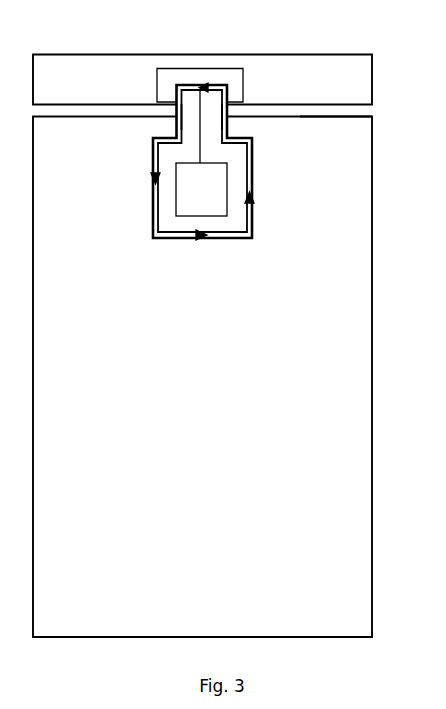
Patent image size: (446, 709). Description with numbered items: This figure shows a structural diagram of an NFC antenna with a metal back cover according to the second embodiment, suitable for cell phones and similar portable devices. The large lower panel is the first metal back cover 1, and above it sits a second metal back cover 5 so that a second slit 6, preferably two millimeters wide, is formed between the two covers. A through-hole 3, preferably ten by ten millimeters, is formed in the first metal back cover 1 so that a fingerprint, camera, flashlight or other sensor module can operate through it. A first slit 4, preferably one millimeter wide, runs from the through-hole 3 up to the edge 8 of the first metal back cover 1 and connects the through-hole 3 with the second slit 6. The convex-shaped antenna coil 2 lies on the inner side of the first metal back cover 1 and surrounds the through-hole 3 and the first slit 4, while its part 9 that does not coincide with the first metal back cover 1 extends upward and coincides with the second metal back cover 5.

The first metal back cover 1 is at (280, 313).
The antenna coil 2 is at (228, 241).
The through-hole 3 is at (186, 193).
The first slit 4 is at (205, 147).
The second metal back cover 5 is at (350, 90).
The second slit 6 is at (366, 118).
The edge of the first metal back cover 8 is at (207, 125).
The part of the antenna coil 9 is at (195, 68).